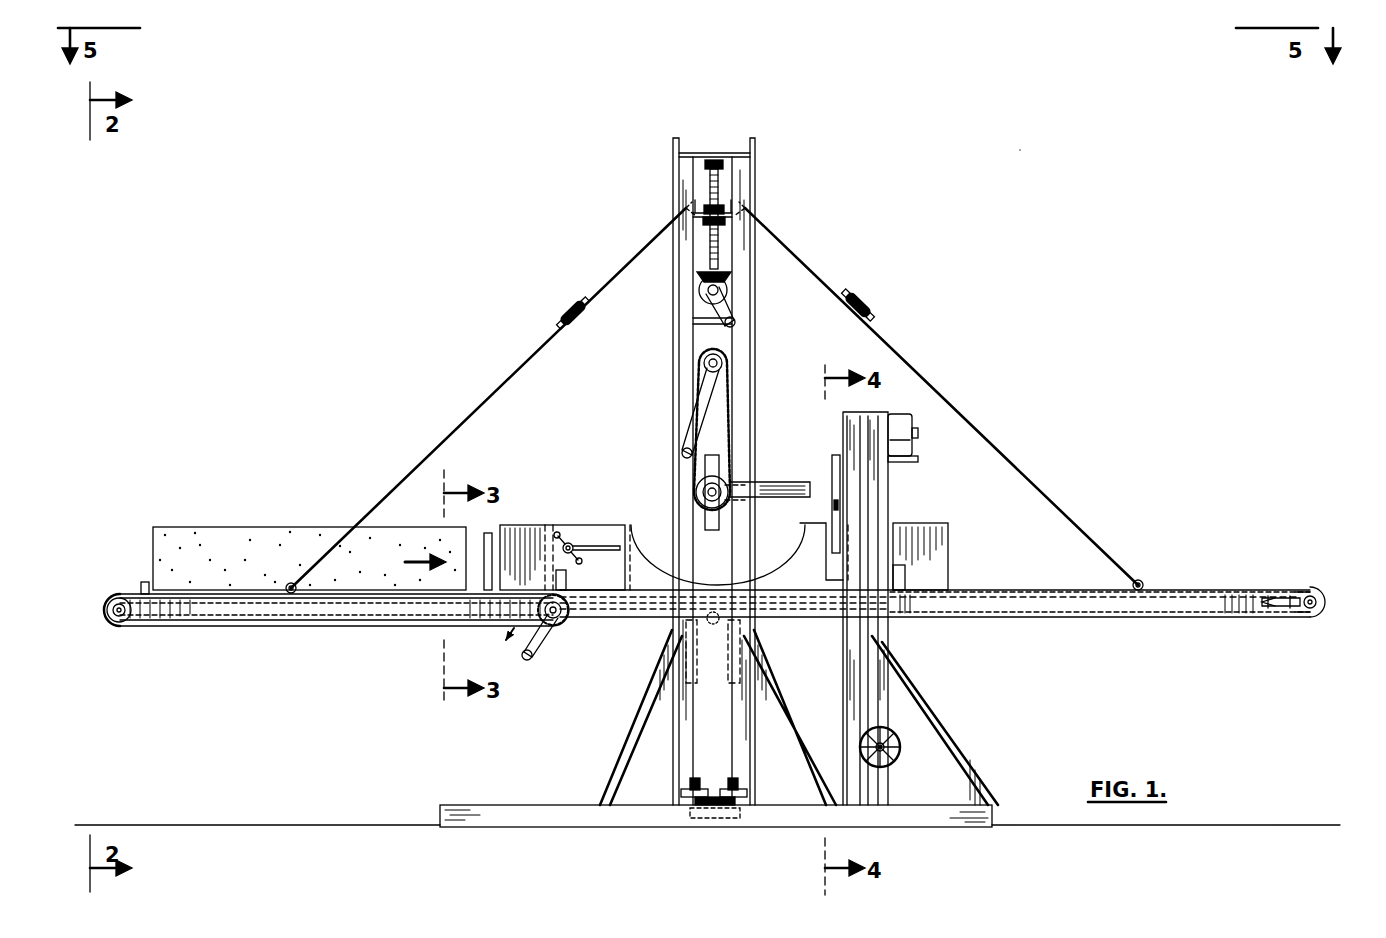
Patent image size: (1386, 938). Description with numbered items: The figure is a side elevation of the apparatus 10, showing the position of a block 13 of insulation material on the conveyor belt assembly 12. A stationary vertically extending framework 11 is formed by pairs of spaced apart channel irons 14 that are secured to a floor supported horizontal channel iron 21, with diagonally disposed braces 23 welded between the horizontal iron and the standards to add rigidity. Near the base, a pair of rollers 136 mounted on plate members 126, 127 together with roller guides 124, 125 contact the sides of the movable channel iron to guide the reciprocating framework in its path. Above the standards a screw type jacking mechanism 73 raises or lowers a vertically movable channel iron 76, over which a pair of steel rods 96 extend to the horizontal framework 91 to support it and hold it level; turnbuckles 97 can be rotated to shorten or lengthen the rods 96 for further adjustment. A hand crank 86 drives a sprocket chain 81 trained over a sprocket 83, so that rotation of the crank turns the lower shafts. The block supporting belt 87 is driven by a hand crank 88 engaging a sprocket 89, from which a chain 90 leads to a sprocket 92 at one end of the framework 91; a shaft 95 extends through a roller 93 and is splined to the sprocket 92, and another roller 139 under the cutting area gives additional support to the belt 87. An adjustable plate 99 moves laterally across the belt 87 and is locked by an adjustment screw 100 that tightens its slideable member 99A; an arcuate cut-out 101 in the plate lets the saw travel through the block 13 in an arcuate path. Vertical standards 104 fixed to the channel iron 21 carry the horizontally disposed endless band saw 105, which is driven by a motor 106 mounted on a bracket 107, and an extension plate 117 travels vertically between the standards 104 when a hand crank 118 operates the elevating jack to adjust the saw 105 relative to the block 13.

The apparatus 10 is at (985, 295).
The stationary vertically extending framework 11 is at (772, 160).
The conveyor belt assembly 12 is at (250, 642).
The block of insulation material 13 is at (240, 555).
The channel irons 14 is at (676, 388).
The horizontal channel iron 21 is at (935, 812).
The diagonally disposed braces 23 is at (615, 745).
The jacking mechanism 73 is at (722, 290).
The vertically movable channel iron 76 is at (728, 207).
The sprocket chain 81 is at (741, 411).
The sprocket 83 is at (730, 478).
The hand crank 86 is at (692, 421).
The block supporting belt 87 is at (146, 592).
The hand crank 88 is at (530, 652).
The sprocket 89 is at (556, 617).
The chain 90 is at (395, 632).
The horizontal framework 91 is at (185, 612).
The sprocket 92 is at (112, 617).
The roller 93 is at (1318, 600).
The shaft 95 is at (108, 606).
The steel rods 96 is at (508, 374).
The turnbuckles 97 is at (565, 312).
The adjustable plate 99 is at (526, 525).
The slideable member 99A is at (553, 525).
The adjustment screw 100 is at (575, 545).
The arcuate cut-out 101 is at (672, 548).
The vertical standards 104 is at (846, 645).
The saw 105 is at (832, 505).
The motor 106 is at (905, 440).
The bracket 107 is at (905, 462).
The extension plate 117 is at (855, 535).
The hand crank 118 is at (892, 765).
The roller guide 124 is at (700, 783).
The roller guide 125 is at (738, 783).
The plate member 126 is at (670, 800).
The plate member 127 is at (752, 795).
The rollers 136 is at (724, 812).
The roller 139 is at (722, 619).